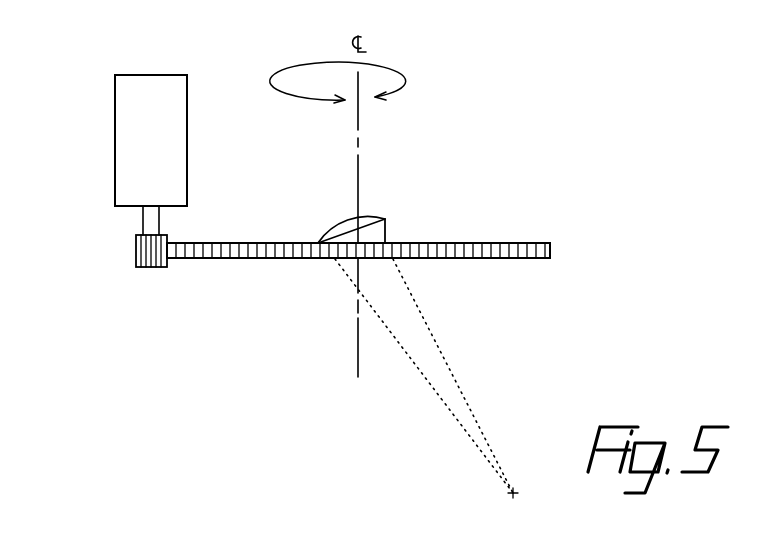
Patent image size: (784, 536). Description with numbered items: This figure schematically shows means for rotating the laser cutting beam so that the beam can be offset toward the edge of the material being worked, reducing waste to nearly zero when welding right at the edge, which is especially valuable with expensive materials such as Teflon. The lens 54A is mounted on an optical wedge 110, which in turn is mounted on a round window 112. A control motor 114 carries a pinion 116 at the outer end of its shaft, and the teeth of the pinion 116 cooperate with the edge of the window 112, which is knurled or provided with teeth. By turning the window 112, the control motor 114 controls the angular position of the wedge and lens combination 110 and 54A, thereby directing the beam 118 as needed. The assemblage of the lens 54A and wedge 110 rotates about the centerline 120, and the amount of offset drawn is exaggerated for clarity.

The control motor 114 is at (137, 117).
The pinion 116 is at (135, 252).
The round window 112 is at (531, 242).
The lens 54A is at (337, 220).
The optical wedge 110 is at (380, 232).
The beam 118 is at (420, 338).
The centerline 120 is at (357, 347).